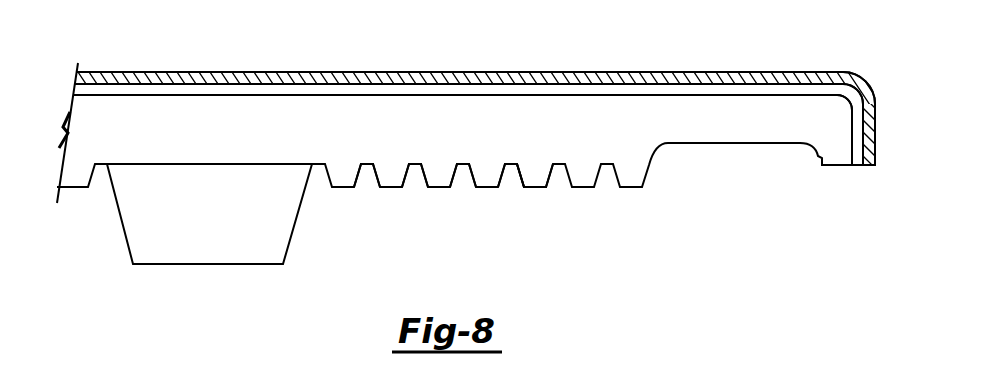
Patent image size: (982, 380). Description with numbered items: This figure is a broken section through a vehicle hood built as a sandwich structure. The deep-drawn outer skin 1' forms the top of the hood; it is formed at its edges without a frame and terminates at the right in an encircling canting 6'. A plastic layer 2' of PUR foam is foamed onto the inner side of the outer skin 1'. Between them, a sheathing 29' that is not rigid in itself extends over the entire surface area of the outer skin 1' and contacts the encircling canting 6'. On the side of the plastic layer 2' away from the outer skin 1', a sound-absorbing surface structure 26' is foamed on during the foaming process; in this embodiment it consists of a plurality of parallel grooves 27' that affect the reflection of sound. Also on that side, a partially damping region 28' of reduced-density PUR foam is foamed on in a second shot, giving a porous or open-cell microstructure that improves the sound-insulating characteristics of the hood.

The deep-drawn outer skin 1' is at (506, 106).
The plastic layer 2' is at (466, 110).
The encircling canting 6' is at (876, 144).
The sound-absorbing surface structure 26' is at (546, 224).
The parallel grooves 27' is at (439, 219).
The damping regions 28' is at (209, 234).
The sheathing 29' is at (576, 100).